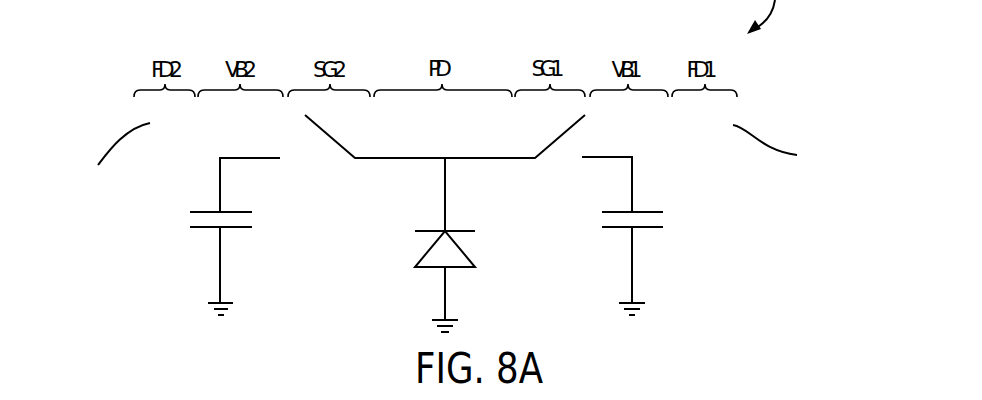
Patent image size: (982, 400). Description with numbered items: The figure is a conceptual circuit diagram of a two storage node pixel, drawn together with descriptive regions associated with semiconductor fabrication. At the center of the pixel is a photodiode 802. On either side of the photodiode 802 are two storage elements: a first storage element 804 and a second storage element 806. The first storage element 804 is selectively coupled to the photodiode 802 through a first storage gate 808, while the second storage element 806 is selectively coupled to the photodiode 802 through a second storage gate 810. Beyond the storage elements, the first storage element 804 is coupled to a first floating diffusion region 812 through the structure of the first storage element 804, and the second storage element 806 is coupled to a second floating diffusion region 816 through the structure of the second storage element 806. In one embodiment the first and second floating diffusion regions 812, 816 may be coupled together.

The photodiode 802 is at (468, 257).
The first storage device/element 804 is at (602, 219).
The second storage device/element 806 is at (247, 218).
The first storage gate 808 is at (555, 138).
The second storage gate 810 is at (338, 142).
The first floating diffusion region 812 is at (780, 147).
The second floating diffusion region 816 is at (98, 165).